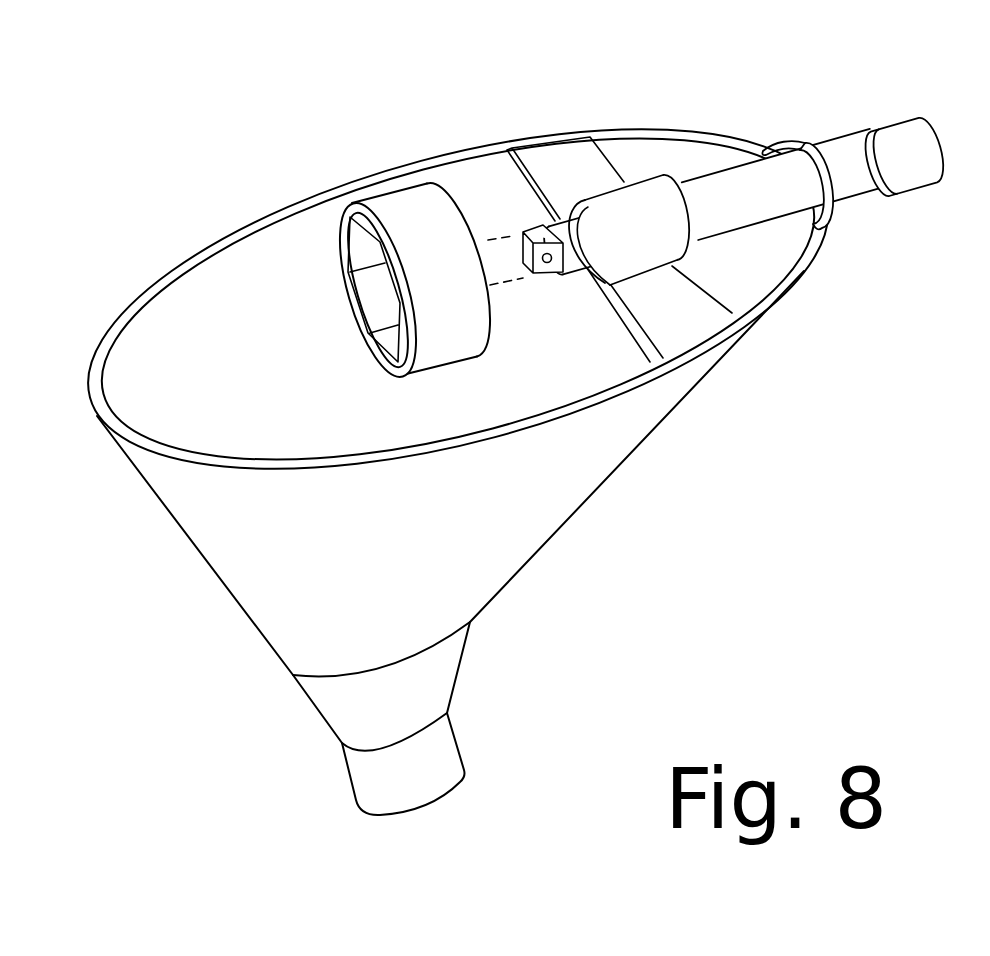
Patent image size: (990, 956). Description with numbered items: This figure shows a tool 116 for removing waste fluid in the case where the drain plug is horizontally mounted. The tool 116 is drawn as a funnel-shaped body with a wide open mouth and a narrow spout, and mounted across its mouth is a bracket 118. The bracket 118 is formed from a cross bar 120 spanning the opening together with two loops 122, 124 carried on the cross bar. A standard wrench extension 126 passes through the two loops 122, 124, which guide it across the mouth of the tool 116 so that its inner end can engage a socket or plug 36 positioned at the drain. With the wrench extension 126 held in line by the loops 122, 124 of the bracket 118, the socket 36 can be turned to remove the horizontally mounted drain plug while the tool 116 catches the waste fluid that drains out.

The tool 116 is at (195, 247).
The socket 36 is at (393, 215).
The bracket 118 is at (781, 133).
The cross bar 120 is at (550, 160).
The loop 122 is at (643, 253).
The loop 124 is at (826, 210).
The wrench extension 126 is at (847, 132).